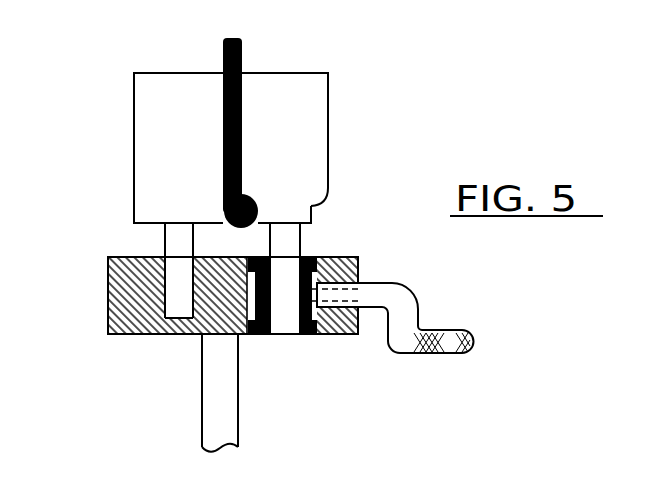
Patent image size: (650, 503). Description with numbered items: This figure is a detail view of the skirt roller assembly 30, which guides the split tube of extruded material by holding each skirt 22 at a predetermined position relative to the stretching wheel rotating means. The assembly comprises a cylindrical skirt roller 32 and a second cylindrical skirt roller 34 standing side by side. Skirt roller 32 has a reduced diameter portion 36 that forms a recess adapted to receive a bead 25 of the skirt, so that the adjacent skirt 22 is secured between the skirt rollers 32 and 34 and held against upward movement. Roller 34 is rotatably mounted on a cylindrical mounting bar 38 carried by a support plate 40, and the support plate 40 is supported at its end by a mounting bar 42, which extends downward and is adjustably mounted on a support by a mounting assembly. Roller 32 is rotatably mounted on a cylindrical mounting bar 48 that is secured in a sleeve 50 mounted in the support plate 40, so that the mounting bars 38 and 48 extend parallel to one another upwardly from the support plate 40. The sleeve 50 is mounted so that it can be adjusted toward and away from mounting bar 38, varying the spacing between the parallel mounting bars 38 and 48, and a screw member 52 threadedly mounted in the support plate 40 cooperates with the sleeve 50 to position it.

The skirt 22 is at (222, 58).
The bead 25 is at (250, 196).
The skirt roller assembly 30 is at (372, 62).
The cylindrical skirt roller 32 is at (315, 147).
The cylindrical skirt roller 34 is at (152, 105).
The reduced diameter portion 36 is at (313, 203).
The cylindrical mounting bar 38 is at (177, 245).
The support plate 40 is at (122, 328).
The mounting bar 42 is at (220, 420).
The cylindrical mounting bar 48 is at (285, 245).
The sleeve 50 is at (307, 335).
The screw member 52 is at (398, 311).